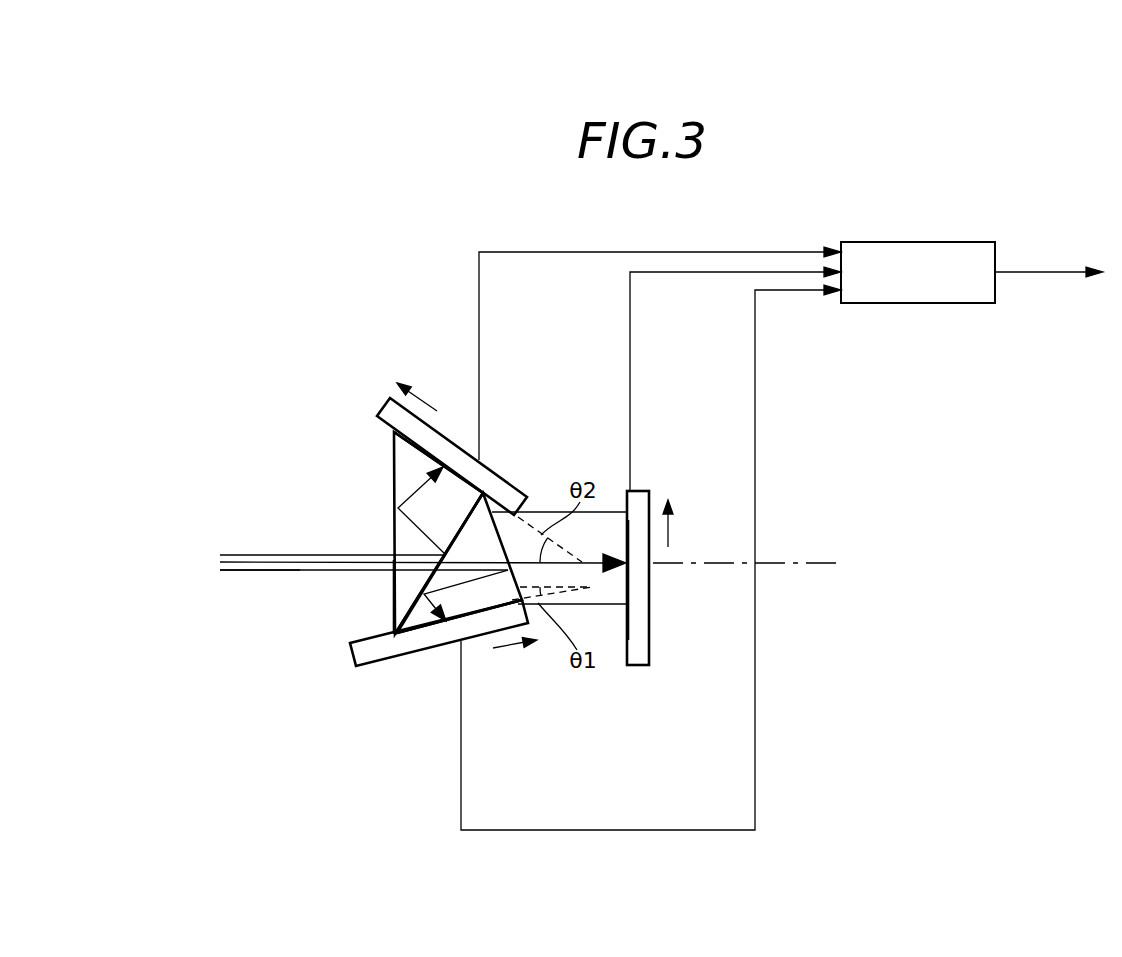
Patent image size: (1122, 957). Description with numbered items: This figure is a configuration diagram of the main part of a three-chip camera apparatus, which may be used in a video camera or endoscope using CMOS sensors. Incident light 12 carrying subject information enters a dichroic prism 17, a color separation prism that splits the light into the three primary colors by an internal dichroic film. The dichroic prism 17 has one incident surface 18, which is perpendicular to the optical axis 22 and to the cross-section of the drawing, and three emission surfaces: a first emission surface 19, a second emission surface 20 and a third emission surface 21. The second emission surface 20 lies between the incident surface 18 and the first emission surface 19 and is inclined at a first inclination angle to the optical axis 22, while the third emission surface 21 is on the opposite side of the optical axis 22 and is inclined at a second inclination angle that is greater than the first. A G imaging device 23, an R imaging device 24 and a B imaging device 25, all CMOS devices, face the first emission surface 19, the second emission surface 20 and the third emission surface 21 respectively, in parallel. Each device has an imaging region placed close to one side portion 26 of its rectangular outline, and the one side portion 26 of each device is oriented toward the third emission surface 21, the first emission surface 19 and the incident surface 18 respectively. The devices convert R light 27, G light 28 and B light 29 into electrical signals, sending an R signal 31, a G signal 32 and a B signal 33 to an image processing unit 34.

The incident light 12 is at (233, 526).
The dichroic prism 17 is at (384, 606).
The incident surface 18 is at (393, 477).
The first emission surface 19 is at (628, 595).
The second emission surface 20 is at (433, 628).
The third emission surface 21 is at (453, 467).
The optical axis 22 is at (813, 563).
The G imaging device 23 is at (643, 587).
The R imaging device 24 is at (408, 657).
The B imaging device 25 is at (503, 475).
The one side portion 26 is at (381, 407).
The R light 27 is at (280, 572).
The G light 28 is at (278, 558).
The B light 29 is at (310, 555).
The R signal 31 is at (757, 413).
The G signal 32 is at (742, 272).
The B signal 33 is at (687, 252).
The image processing unit 34 is at (910, 242).